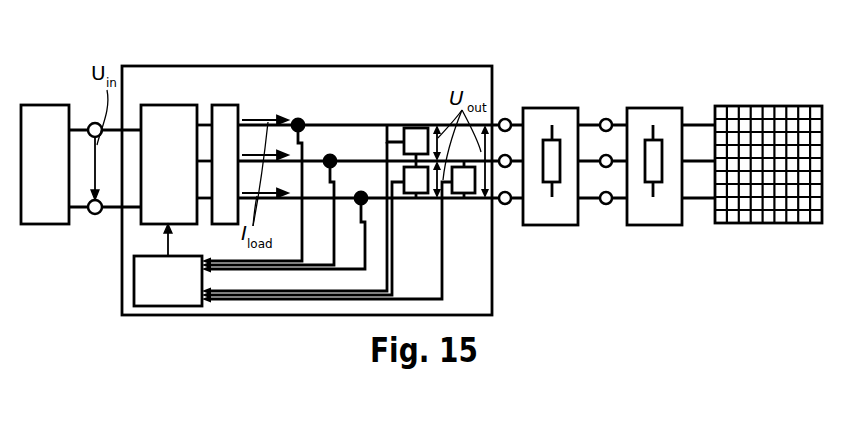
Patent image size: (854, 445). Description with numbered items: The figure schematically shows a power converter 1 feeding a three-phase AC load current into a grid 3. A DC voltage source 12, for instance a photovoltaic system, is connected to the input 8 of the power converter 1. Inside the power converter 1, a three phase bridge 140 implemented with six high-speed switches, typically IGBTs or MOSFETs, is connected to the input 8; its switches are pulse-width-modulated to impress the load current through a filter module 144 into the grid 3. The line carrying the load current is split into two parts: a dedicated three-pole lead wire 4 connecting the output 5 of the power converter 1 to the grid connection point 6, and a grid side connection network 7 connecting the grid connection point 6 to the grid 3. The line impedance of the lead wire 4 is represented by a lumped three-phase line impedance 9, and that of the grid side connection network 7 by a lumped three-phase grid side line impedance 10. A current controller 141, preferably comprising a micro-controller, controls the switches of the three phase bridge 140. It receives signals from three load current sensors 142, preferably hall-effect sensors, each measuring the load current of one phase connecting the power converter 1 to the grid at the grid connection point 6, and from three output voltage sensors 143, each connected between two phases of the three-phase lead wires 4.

The power converter 1 is at (306, 66).
The grid 3 is at (795, 106).
The three-pole lead wire 4 is at (587, 197).
The output 5 is at (507, 197).
The grid connection point 6 is at (612, 197).
The grid side connection network 7 is at (697, 197).
The input 8 is at (93, 200).
The lumped three-phase line impedance 9 is at (542, 108).
The lumped three-phase grid side line impedance 10 is at (641, 108).
The DC voltage source 12 is at (55, 105).
The three phase bridge 140 is at (172, 105).
The current controller 141 is at (155, 306).
The load current sensors 142 is at (361, 192).
The output voltage sensors 143 is at (447, 181).
The filter module 144 is at (232, 105).